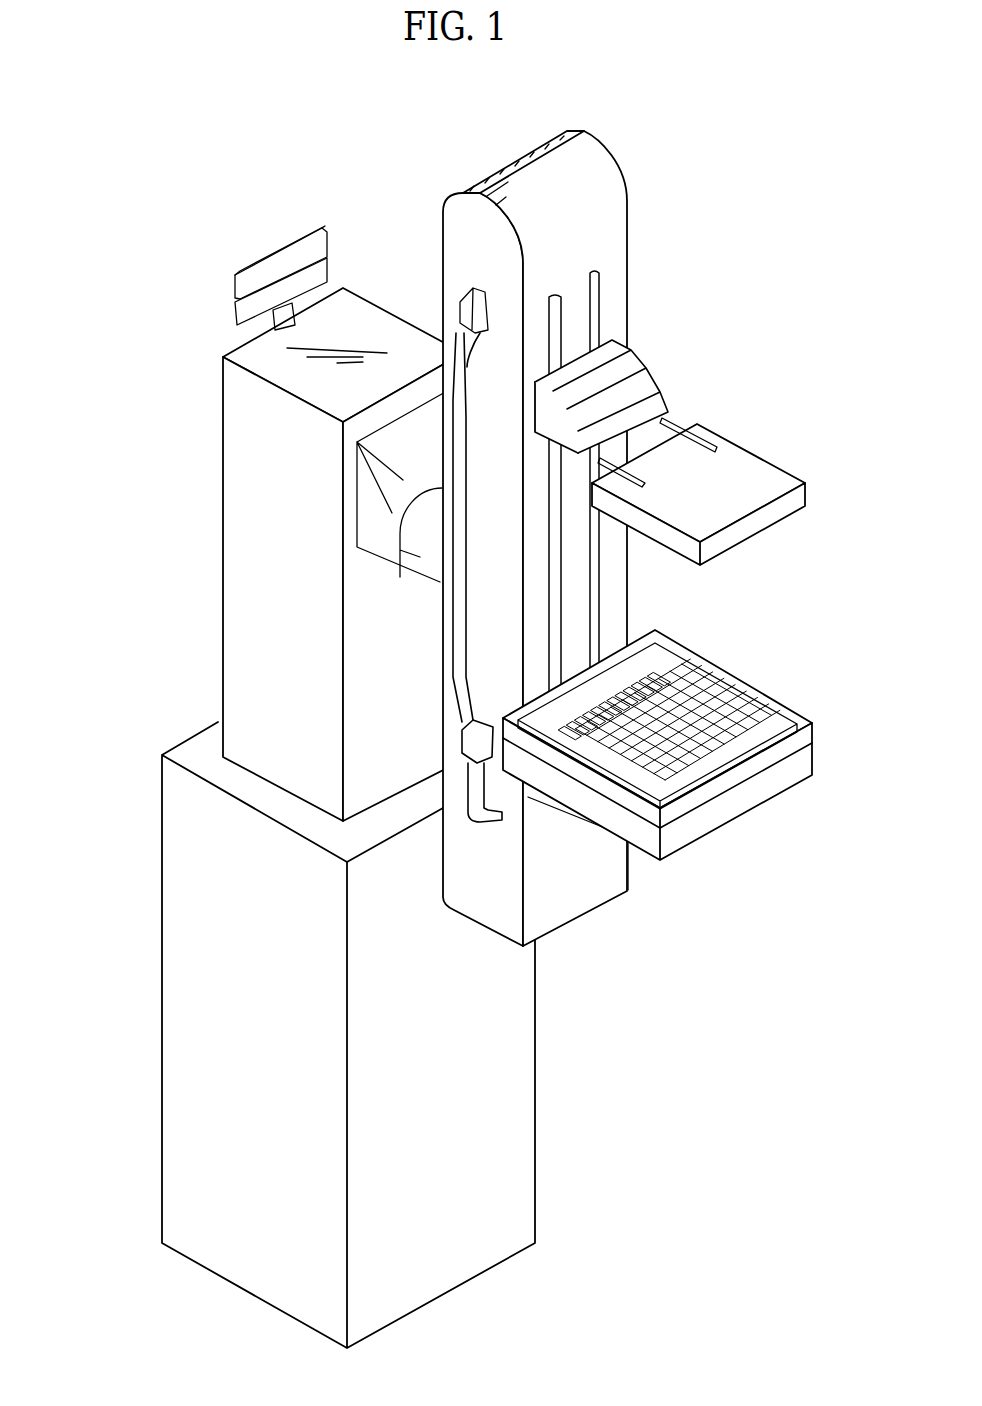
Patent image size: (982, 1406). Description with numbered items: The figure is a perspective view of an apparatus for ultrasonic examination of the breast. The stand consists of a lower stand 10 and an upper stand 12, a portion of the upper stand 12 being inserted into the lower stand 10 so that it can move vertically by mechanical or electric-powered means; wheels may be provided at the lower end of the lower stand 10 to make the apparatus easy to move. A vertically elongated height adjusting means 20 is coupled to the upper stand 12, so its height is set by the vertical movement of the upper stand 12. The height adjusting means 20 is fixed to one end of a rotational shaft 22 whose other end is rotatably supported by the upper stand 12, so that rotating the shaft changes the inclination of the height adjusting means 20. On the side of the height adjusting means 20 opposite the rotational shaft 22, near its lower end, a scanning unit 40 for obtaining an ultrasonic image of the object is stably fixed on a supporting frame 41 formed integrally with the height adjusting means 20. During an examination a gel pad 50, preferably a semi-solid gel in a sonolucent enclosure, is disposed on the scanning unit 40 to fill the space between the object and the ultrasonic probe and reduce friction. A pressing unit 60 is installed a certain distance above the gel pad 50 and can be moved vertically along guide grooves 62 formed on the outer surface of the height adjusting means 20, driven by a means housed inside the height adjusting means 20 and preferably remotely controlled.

The lower stand 10 is at (192, 993).
The upper stand 12 is at (233, 510).
The height adjusting means 20 is at (602, 187).
The rotational shaft 22 is at (422, 535).
The scanning unit 40 is at (767, 780).
The supporting frame 41 is at (568, 816).
The gel pad 50 is at (763, 698).
The pressing unit 60 is at (743, 508).
The guide grooves 62 is at (565, 614).